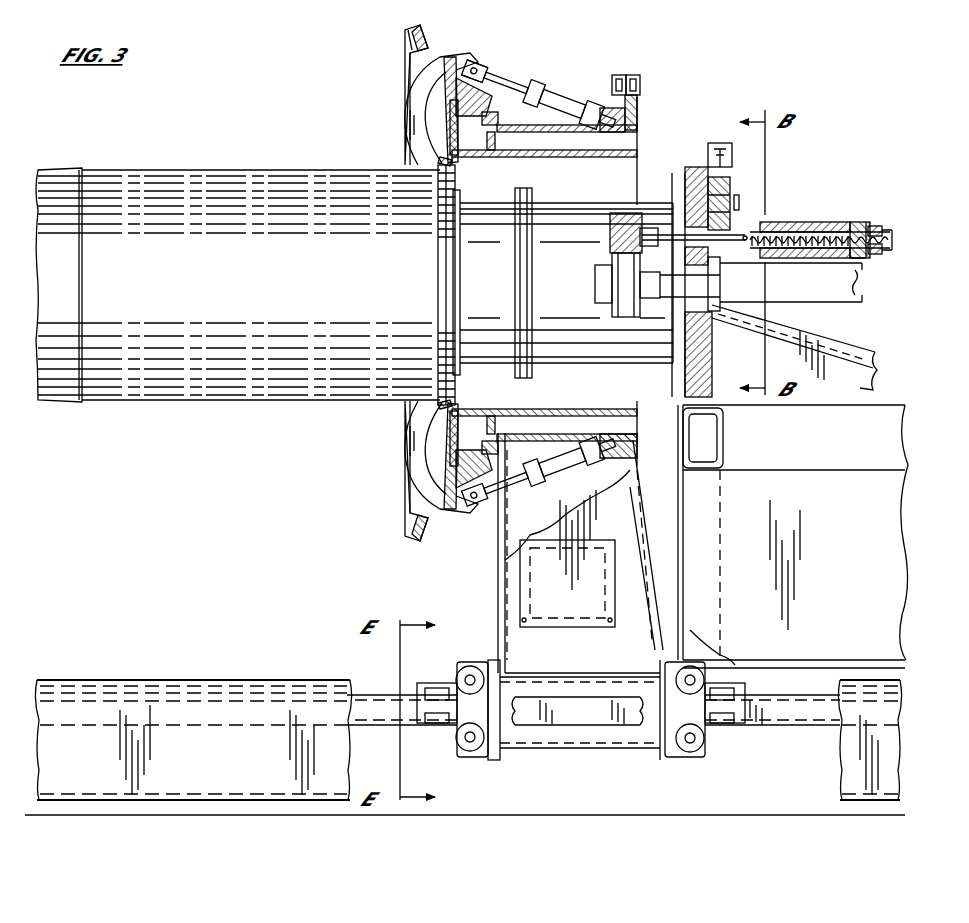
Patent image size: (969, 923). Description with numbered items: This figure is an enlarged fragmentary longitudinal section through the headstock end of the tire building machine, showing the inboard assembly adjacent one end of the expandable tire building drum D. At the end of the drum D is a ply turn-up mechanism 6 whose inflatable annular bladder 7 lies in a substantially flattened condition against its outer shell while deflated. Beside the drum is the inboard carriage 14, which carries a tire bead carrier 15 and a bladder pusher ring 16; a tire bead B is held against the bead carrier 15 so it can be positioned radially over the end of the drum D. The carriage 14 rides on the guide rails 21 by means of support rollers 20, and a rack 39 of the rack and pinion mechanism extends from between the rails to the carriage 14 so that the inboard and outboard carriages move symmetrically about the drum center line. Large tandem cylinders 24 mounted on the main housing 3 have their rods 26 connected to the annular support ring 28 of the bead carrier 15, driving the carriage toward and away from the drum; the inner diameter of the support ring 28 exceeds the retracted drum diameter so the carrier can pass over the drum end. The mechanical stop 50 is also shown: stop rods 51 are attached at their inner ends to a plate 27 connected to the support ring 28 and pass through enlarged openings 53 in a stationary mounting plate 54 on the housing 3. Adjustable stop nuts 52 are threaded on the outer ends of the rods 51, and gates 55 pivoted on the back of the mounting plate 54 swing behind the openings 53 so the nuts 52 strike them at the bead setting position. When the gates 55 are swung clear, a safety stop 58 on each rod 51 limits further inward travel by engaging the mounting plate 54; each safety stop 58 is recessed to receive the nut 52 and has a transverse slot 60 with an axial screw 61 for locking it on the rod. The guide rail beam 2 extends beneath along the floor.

The tire building drum D is at (55, 166).
The ply turn-up mechanism 6 is at (195, 166).
The inflatable annular air bag or bladder 7 is at (270, 170).
The bladder pusher ring 16 is at (418, 40).
The tire bead carrier 15 is at (440, 118).
The tire bead B is at (440, 158).
The annular support ring 28 is at (540, 153).
The plate 27 is at (626, 214).
The enlarged openings 53 is at (692, 205).
The gates 55 is at (730, 212).
The rods 51 is at (745, 236).
The adjustable nuts 52 is at (810, 226).
The mechanical stop 50 is at (836, 220).
The safety stop 58 is at (858, 224).
The screws 61 is at (878, 232).
The transverse slot 60 is at (866, 258).
The rods 26 is at (690, 283).
The tandem cylinders 24 is at (850, 304).
The stationary mounting plate 54 is at (685, 414).
The main housing 3 is at (805, 507).
The carriage 14 is at (506, 577).
The support rollers 20 is at (472, 665).
The guide rails 21 is at (366, 695).
The rack 39 is at (406, 698).
The rail 2 is at (192, 797).